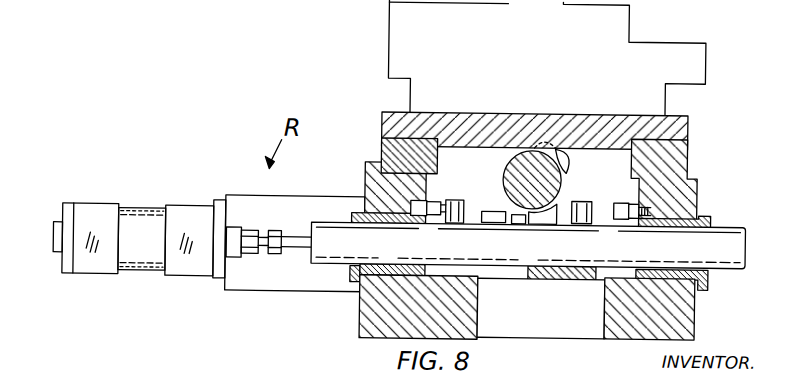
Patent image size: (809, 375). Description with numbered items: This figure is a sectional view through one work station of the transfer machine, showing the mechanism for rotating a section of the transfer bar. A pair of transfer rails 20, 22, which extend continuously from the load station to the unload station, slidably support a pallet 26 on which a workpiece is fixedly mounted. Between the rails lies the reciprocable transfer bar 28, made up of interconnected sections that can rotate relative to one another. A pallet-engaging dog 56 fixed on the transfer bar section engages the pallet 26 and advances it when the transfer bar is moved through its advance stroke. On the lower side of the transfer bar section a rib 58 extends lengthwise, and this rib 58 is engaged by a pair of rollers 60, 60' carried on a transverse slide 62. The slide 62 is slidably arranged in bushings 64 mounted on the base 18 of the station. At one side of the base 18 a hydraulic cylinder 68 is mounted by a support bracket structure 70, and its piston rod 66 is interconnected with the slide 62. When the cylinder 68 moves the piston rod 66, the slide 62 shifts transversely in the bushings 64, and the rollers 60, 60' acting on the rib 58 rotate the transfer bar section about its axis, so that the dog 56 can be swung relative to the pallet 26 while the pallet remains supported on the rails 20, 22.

The base 18 is at (377, 312).
The transfer rail 20 is at (382, 149).
The transfer rail 22 is at (618, 19).
The pallet 26 is at (690, 121).
The transfer bar 28 is at (506, 172).
The pallet-engaging dog 56 is at (564, 151).
The rib 58 is at (508, 215).
The roller 60 is at (530, 231).
The roller 60' is at (485, 237).
The transverse slide 62 is at (730, 227).
The bushing 64 is at (390, 272).
The piston rod 66 is at (233, 233).
The hydraulic cylinder 68 is at (138, 211).
The support bracket structure 70 is at (254, 280).